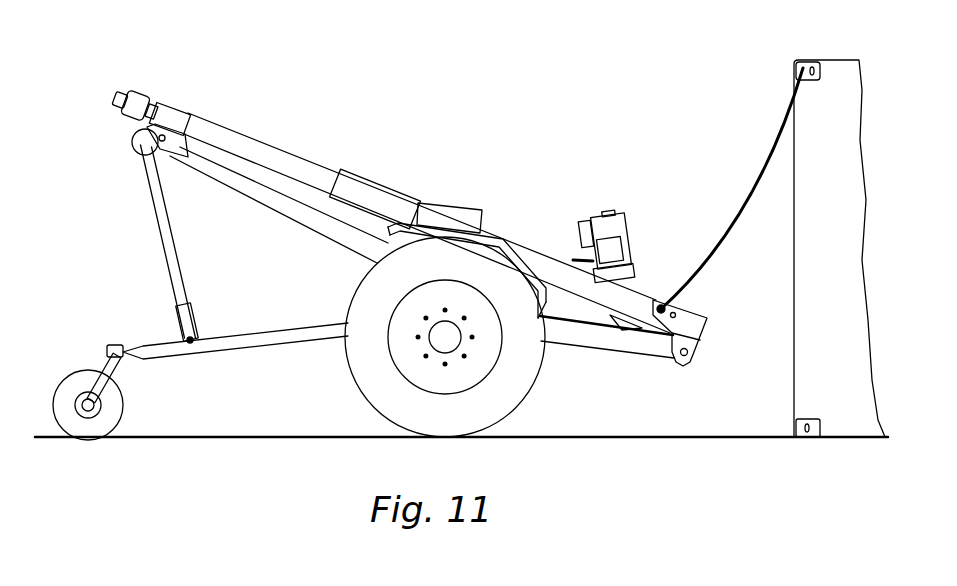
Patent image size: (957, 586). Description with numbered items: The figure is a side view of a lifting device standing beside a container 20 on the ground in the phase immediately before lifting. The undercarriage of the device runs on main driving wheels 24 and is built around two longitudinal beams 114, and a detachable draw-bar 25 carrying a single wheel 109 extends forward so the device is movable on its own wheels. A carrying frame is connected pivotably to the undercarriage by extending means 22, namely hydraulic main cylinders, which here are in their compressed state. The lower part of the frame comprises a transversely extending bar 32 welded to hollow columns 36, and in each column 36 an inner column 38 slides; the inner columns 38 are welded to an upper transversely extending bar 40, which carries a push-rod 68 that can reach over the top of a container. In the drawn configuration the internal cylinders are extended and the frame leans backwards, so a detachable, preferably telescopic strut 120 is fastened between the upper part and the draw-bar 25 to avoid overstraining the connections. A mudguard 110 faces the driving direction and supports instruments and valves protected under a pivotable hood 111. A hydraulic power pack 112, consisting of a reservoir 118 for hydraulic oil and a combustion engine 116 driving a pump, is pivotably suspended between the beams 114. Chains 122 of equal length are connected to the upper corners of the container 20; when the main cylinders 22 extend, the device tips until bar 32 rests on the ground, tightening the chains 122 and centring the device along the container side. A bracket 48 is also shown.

The container 20 is at (846, 308).
The extending means 22 is at (278, 203).
The main driving wheels 24 is at (368, 372).
The draw-bar 25 is at (265, 336).
The transversely extending bar 32 is at (698, 337).
The hollow columns 36 is at (368, 192).
The inner column 38 is at (262, 150).
The transversely extending bar 40 is at (173, 116).
The anchor bracket 48 is at (812, 62).
The push-rod 68 is at (137, 98).
The single wheel 109 is at (70, 382).
The mudguard 110 is at (512, 243).
The pivotable hood 111 is at (450, 212).
The hydraulic power pack 112 is at (634, 236).
The longitudinal beams 114 is at (598, 340).
The combustion engine 116 is at (610, 222).
The reservoir 118 is at (628, 278).
The strut 120 is at (158, 215).
The chains 122 is at (760, 148).